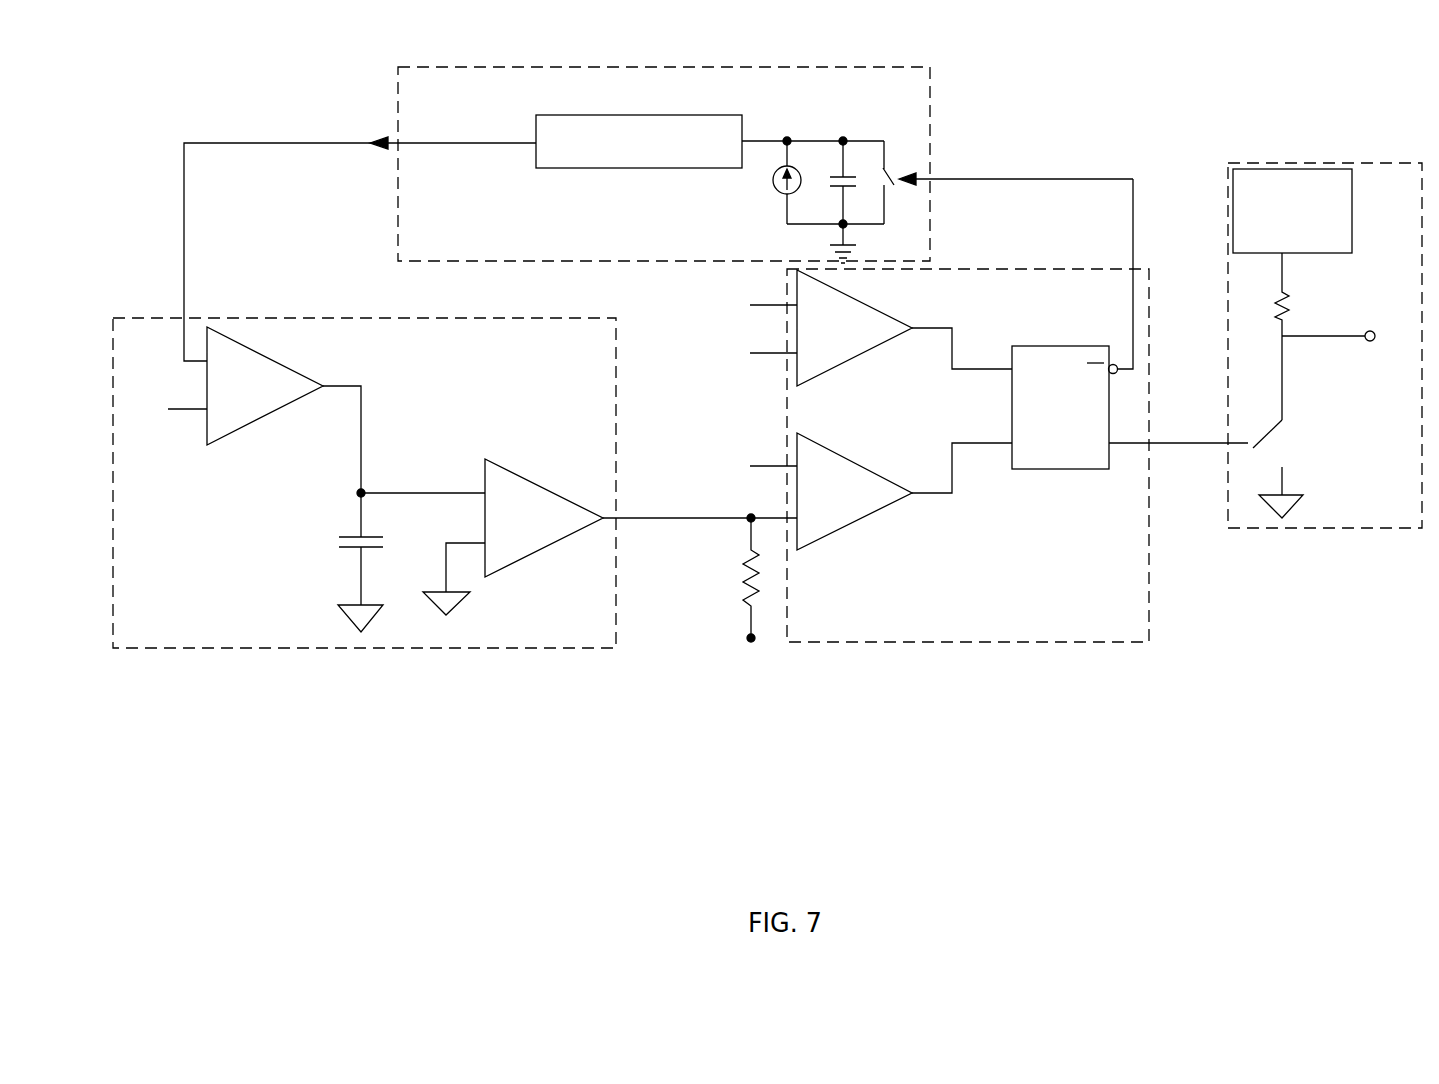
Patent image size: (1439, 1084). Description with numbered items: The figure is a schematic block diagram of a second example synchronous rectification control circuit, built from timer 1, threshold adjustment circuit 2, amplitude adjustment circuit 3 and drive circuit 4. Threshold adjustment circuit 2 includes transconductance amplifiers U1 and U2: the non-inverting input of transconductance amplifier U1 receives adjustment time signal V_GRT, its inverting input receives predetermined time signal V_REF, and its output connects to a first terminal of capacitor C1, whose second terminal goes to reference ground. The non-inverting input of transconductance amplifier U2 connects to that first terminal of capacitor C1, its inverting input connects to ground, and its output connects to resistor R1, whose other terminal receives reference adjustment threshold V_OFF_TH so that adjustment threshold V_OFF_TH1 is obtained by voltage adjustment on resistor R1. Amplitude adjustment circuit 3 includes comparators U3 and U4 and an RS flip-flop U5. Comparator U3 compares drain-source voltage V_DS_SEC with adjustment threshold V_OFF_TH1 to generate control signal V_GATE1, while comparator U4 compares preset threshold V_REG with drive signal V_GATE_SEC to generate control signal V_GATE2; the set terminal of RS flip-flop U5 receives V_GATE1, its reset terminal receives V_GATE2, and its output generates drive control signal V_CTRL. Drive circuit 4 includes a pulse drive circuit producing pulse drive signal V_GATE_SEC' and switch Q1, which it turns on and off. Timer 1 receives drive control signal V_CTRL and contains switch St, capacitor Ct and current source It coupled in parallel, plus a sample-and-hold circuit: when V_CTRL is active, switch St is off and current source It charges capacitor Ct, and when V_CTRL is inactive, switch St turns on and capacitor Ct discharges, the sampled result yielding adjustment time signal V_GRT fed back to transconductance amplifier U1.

The timer 1 is at (658, 214).
The threshold adjustment circuit 2 is at (455, 483).
The amplitude adjustment circuit 3 is at (936, 412).
The drive circuit 4 is at (1325, 345).
The transconductance amplifier U1 is at (265, 386).
The transconductance amplifier U2 is at (544, 518).
The comparator U3 is at (854, 491).
The comparator U4 is at (854, 327).
The RS flip-flop U5 is at (1065, 389).
The capacitor C1 is at (343, 549).
The resistor R1 is at (733, 580).
The switch Q1 is at (1258, 422).
The current source It is at (779, 182).
The capacitor Ct is at (833, 182).
The switch St is at (901, 182).